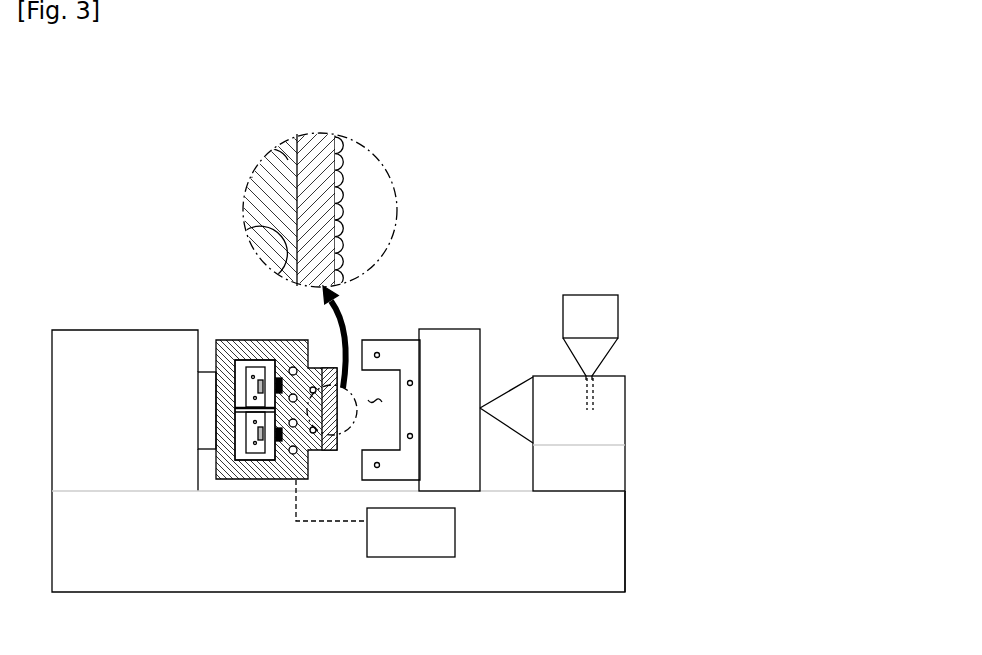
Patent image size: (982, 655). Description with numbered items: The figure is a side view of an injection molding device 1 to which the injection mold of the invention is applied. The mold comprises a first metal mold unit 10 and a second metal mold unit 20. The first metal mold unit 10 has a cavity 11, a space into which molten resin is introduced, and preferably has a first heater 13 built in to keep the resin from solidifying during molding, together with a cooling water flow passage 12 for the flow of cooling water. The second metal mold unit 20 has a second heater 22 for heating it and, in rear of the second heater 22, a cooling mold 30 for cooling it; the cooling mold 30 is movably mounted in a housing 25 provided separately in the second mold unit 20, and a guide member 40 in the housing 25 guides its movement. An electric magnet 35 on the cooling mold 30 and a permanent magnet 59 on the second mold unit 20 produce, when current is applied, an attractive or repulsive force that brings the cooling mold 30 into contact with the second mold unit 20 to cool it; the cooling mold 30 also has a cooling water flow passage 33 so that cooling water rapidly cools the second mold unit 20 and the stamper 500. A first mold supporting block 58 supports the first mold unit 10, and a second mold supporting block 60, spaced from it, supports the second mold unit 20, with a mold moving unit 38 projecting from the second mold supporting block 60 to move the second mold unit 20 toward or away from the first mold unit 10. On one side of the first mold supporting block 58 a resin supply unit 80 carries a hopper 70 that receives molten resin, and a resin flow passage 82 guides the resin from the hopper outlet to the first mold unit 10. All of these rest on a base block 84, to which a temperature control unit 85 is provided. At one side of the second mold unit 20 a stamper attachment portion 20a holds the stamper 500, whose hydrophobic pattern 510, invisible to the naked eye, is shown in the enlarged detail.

The injection molding machine 1 is at (494, 236).
The first metal mold unit 10 is at (400, 340).
The cavity 11 is at (373, 400).
The cooling water flow passage 12 is at (379, 350).
The first heater 13 is at (411, 378).
The second metal mold unit 20 is at (290, 350).
The stamper attachment portion 20a is at (278, 213).
The second heater 22 is at (315, 433).
The housing 25 is at (268, 378).
The cooling mold 30 is at (244, 374).
The cooling water flow passage 33 is at (255, 399).
The electric magnet 35 is at (257, 439).
The mold moving unit 38 is at (207, 455).
The guide member 40 is at (245, 413).
The first mold supporting block 58 is at (469, 338).
The permanent magnet 59 is at (273, 441).
The second mold supporting block 60 is at (125, 468).
The hopper 70 is at (600, 302).
The resin supply unit 80 is at (629, 418).
The resin flow passage 82 is at (553, 408).
The base block 84 is at (629, 538).
The temperature control unit 85 is at (415, 548).
The stamper 500 is at (355, 170).
The hydrophobic pattern 510 is at (340, 226).